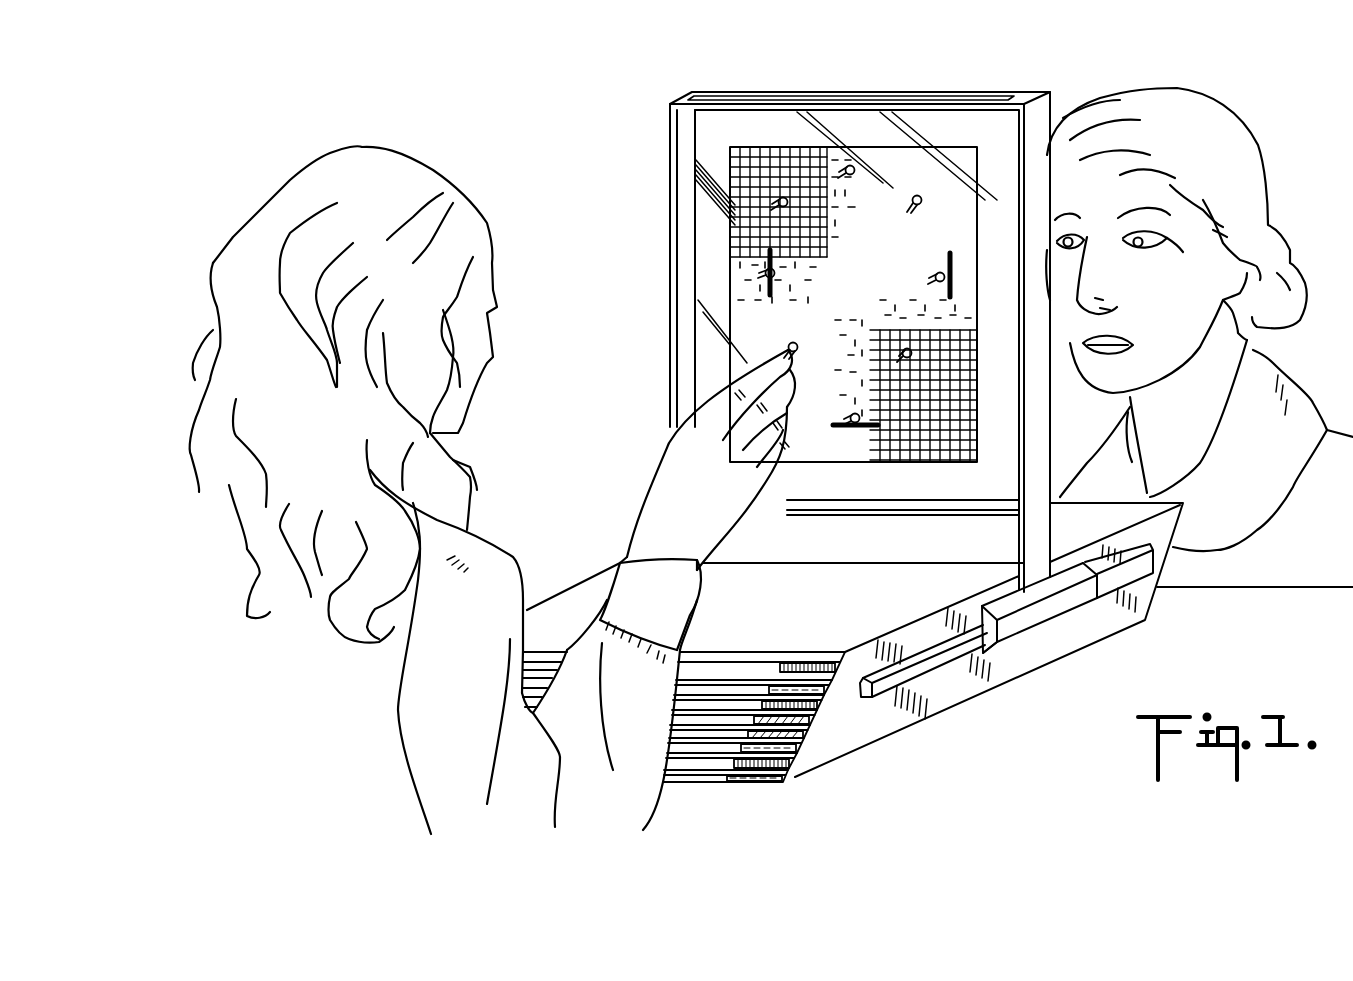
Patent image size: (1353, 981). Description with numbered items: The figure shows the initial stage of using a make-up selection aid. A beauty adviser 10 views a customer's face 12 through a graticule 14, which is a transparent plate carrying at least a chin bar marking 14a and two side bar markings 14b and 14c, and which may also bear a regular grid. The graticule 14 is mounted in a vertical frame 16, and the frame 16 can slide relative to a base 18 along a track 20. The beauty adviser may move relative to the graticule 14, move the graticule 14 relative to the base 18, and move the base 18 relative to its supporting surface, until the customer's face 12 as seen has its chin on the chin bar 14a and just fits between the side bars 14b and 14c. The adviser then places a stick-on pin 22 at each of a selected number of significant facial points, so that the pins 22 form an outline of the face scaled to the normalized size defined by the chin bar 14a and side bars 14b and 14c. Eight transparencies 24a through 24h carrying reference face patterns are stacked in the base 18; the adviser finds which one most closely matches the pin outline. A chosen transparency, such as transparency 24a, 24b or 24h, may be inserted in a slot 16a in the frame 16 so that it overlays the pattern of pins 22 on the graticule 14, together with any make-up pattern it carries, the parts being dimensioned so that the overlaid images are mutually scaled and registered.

The beauty adviser 10 is at (453, 152).
The customer's face 12 is at (1274, 141).
The graticule 14 is at (750, 148).
The chin bar marking 14a is at (872, 433).
The side bar marking 14b is at (762, 290).
The side bar marking 14c is at (953, 283).
The vertical frame 16 is at (1050, 92).
The slot 16a is at (973, 100).
The base 18 is at (855, 735).
The track 20 is at (997, 657).
The stick-on pin 22 is at (857, 166).
The transparency 24a is at (745, 665).
The transparency 24b is at (723, 682).
The transparency 24h is at (705, 777).